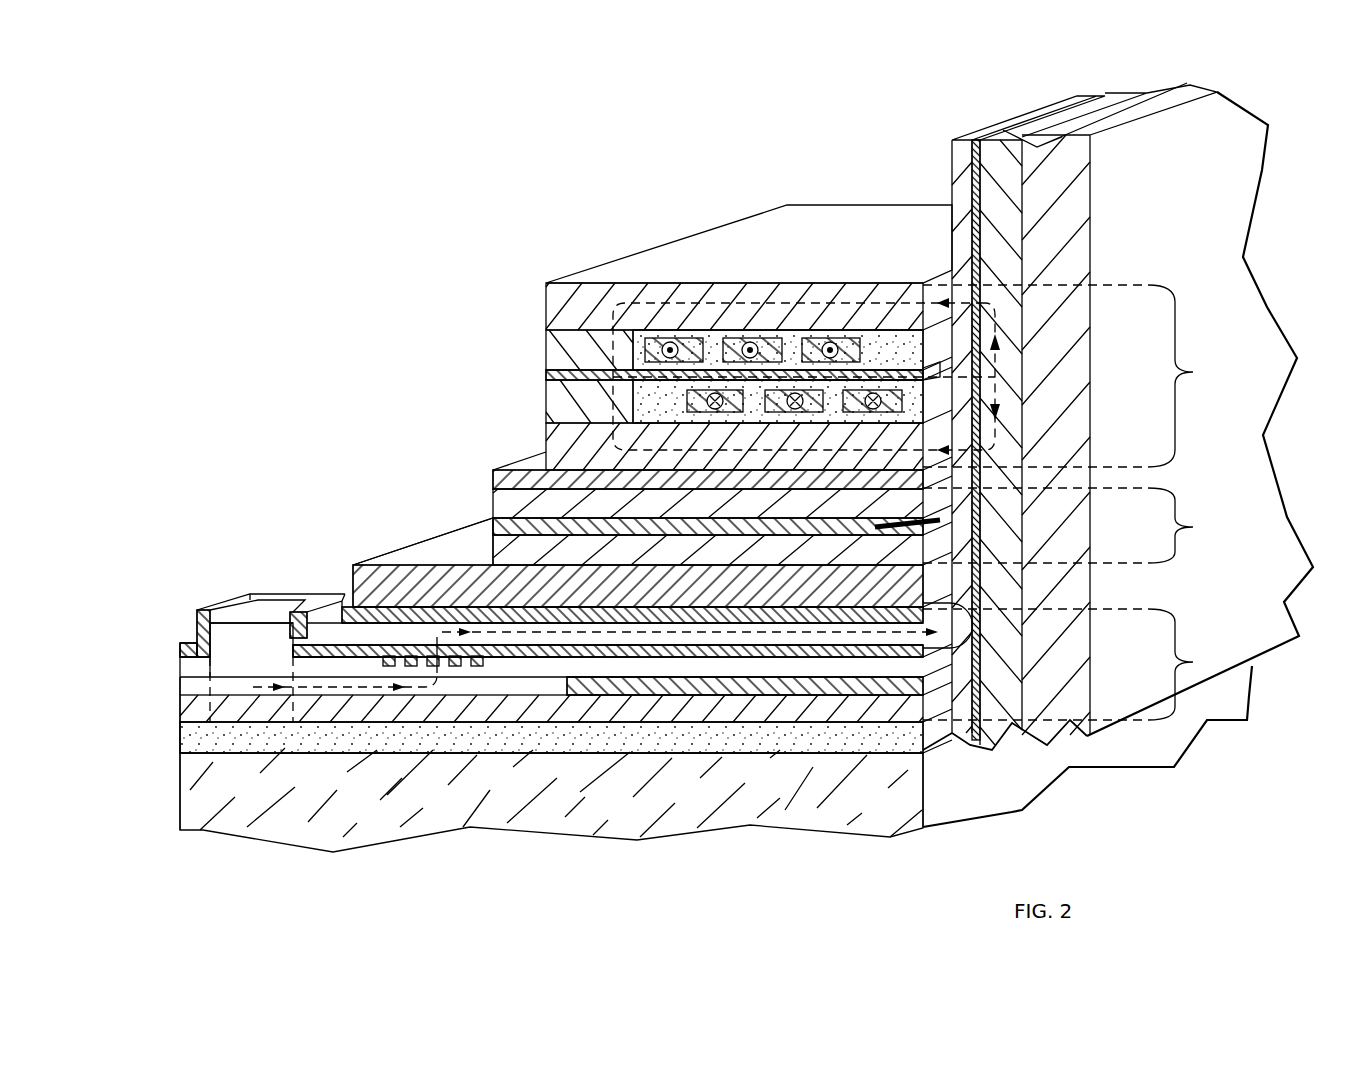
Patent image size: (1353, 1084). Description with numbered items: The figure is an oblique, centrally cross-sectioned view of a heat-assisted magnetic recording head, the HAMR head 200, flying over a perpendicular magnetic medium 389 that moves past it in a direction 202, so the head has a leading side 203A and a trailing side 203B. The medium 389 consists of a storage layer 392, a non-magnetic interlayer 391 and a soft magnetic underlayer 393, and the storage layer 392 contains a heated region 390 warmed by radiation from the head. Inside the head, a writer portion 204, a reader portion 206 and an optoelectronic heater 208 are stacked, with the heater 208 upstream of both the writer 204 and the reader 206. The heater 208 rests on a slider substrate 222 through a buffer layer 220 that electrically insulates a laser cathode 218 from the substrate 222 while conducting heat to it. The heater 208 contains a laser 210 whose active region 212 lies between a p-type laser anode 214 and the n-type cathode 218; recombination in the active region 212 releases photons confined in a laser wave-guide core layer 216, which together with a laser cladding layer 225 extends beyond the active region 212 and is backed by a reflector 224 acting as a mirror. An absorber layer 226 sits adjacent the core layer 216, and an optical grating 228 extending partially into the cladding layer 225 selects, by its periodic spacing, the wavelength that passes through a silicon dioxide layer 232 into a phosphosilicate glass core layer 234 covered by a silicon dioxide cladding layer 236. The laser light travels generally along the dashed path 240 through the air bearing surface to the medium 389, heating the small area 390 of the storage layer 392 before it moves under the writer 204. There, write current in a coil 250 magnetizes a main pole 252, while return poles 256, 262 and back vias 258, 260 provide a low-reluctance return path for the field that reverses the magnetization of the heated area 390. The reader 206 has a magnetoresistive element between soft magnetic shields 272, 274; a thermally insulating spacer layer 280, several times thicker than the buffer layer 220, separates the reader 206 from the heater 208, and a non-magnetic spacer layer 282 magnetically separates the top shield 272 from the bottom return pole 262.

The HAMR head 200 is at (340, 233).
The direction 202 is at (1187, 263).
The leading side 203A is at (945, 812).
The trailing side 203B is at (780, 213).
The writer portion 204 is at (1080, 376).
The reader portion 206 is at (1083, 525).
The optoelectronic heater 208 is at (1080, 664).
The laser 210 is at (262, 522).
The active region 212 is at (248, 690).
The laser anode 214 is at (267, 620).
The laser wave-guide core layer 216 is at (453, 688).
The laser cathode 218 is at (183, 712).
The buffer layer 220 is at (183, 745).
The slider substrate 222 is at (183, 800).
The reflector 224 is at (183, 685).
The laser cladding layer 225 is at (323, 668).
The absorber layer 226 is at (607, 678).
The optical grating 228 is at (473, 667).
The silicon dioxide layer 232 is at (690, 657).
The core layer 234 is at (415, 628).
The silicon dioxide cladding layer 236 is at (345, 605).
The laser radiation 240 is at (267, 665).
The coil 250 is at (873, 393).
The main pole 252 is at (546, 370).
The return pole 256 is at (546, 292).
The back via 258 is at (546, 330).
The back via 260 is at (546, 397).
The return pole 262 is at (546, 440).
The soft magnetic shield 272 is at (493, 498).
The soft magnetic shield 274 is at (493, 540).
The spacer layer 280 is at (403, 547).
The spacer layer 282 is at (493, 468).
The perpendicular magnetic medium 389 is at (987, 414).
The heated region 390 is at (975, 637).
The non-magnetic interlayer 391 is at (975, 180).
The storage layer 392 is at (965, 522).
The soft magnetic underlayer 393 is at (968, 152).